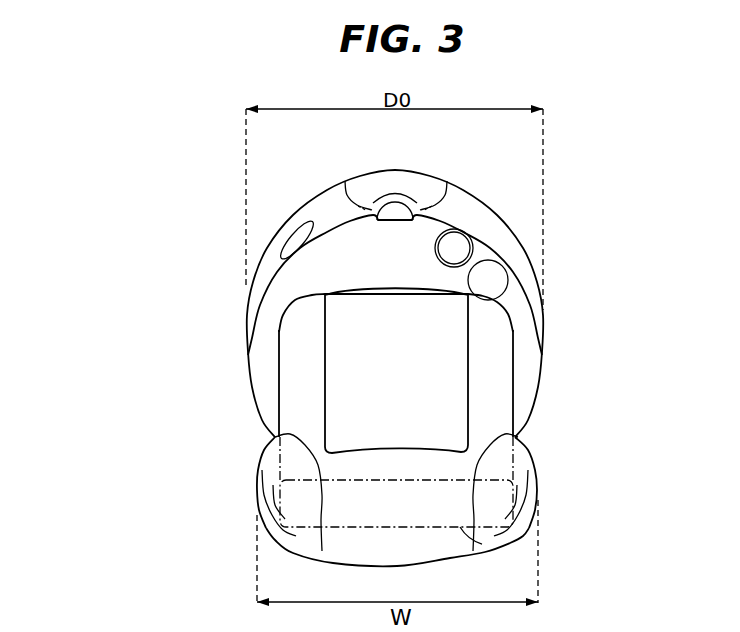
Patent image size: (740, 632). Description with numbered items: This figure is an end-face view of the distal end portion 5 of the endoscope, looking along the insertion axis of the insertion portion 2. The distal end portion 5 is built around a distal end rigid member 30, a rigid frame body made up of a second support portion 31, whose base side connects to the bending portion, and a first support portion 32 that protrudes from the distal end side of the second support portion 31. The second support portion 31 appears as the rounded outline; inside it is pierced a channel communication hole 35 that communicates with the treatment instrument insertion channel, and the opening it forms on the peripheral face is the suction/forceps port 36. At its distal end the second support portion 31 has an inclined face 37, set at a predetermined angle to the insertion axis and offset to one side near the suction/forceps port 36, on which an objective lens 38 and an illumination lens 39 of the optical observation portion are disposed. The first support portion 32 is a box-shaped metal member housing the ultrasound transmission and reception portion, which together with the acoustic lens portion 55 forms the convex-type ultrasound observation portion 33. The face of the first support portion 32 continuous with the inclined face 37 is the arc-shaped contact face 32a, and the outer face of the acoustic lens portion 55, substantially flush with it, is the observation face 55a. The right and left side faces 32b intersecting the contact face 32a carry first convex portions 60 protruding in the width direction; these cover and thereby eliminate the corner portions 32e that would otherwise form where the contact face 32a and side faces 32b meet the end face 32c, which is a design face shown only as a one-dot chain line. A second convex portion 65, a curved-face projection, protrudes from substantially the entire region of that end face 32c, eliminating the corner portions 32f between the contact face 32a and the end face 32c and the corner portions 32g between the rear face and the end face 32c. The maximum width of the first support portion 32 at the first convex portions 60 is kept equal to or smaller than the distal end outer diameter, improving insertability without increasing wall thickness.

The insertion portion 2 is at (203, 169).
The distal end portion 5 is at (229, 238).
The distal end rigid member 30 is at (666, 297).
The second support portion 31 is at (580, 311).
The first support portion 32 is at (582, 480).
The contact face 32a is at (297, 338).
The side faces 32b is at (278, 398).
The end face 32c is at (400, 513).
The corner portions 32e is at (258, 465).
The corner portions 32f is at (290, 434).
The corner portions 32g is at (510, 537).
The convex-type ultrasound observation portion 33 is at (216, 385).
The channel communication hole 35 is at (393, 212).
The suction/forceps port 36 is at (376, 212).
The inclined face 37 is at (330, 267).
The objective lens 38 is at (458, 245).
The illumination lens 39 is at (495, 283).
The acoustic lens portion 55 is at (349, 316).
The observation face 55a is at (356, 376).
The first convex portions 60 is at (262, 486).
The second convex portion 65 is at (373, 552).